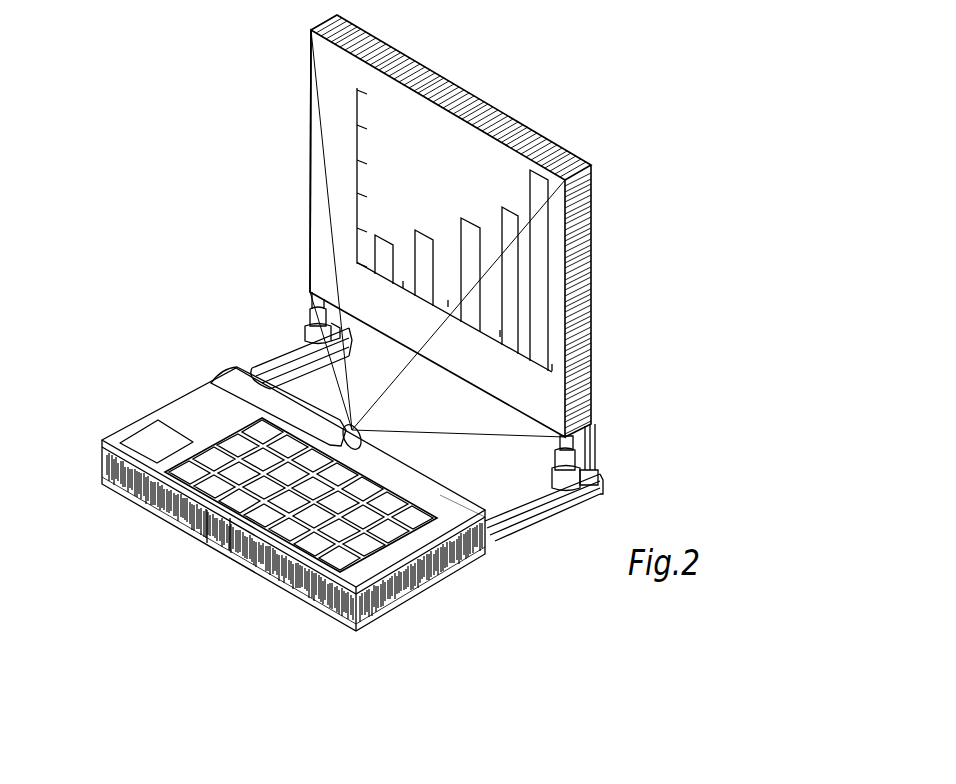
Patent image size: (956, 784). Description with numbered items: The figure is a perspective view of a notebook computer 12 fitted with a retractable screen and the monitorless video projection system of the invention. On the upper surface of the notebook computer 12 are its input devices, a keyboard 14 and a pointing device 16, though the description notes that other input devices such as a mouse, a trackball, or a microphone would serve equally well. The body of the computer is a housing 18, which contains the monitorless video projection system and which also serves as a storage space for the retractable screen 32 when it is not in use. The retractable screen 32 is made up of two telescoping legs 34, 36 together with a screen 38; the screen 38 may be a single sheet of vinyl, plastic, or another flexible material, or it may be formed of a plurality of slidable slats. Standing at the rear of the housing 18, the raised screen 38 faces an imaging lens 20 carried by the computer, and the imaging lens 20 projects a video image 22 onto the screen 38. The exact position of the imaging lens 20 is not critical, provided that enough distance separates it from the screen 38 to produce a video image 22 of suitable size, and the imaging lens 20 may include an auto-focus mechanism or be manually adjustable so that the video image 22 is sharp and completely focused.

The notebook computer 12 is at (375, 600).
The keyboard 14 is at (250, 507).
The pointing device 16 is at (157, 440).
The housing 18 is at (458, 527).
The imaging lens 20 is at (237, 367).
The video image 22 is at (538, 200).
The retractable screen 32 is at (577, 413).
The telescoping leg 34 is at (590, 467).
The telescoping leg 36 is at (312, 320).
The screen 38 is at (332, 78).